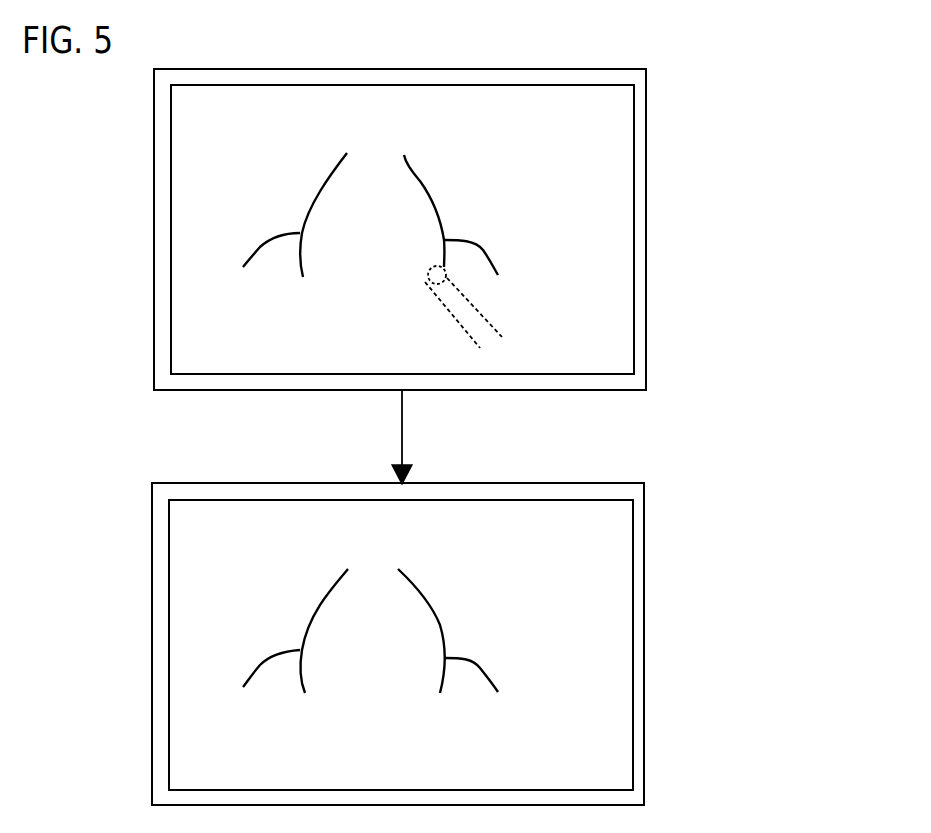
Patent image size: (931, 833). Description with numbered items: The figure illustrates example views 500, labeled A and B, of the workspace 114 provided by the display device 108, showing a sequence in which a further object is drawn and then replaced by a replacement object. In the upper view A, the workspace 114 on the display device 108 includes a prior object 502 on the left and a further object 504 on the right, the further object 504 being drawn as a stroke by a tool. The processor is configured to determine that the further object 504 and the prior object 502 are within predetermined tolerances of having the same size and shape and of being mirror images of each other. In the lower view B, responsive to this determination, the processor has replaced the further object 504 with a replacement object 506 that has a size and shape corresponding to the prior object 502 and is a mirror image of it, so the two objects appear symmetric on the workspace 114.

The example views 500 is at (700, 63).
The display device 108 is at (154, 128).
The workspace 114 is at (288, 107).
The prior object 502 is at (286, 438).
The further object 504 is at (462, 251).
The replacement object 506 is at (459, 651).